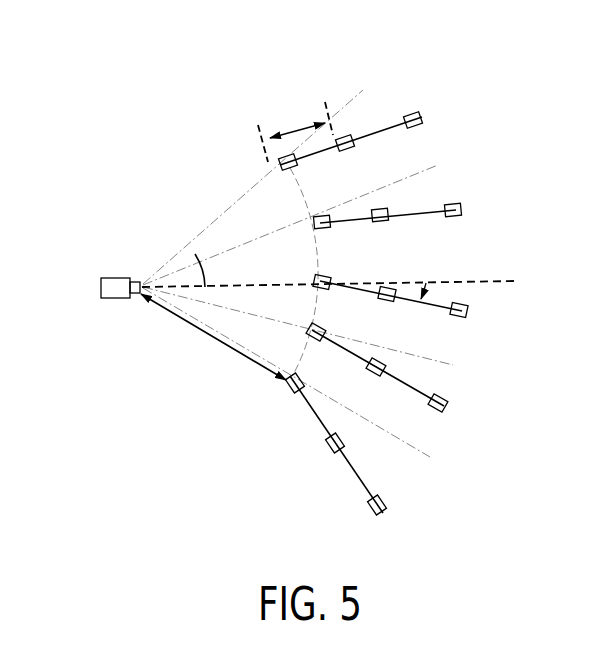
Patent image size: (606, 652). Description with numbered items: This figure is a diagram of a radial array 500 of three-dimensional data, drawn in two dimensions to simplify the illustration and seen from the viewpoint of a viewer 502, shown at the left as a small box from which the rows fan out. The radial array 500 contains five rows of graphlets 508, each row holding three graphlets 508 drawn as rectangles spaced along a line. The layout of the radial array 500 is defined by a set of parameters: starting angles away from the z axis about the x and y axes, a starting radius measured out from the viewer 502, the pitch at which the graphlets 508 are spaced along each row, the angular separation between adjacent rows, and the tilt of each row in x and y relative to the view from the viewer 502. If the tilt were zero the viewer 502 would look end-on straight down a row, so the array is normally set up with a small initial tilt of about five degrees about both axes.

The radial array 500 is at (234, 112).
The viewer 502 is at (101, 286).
The graphlet 508 is at (355, 150).